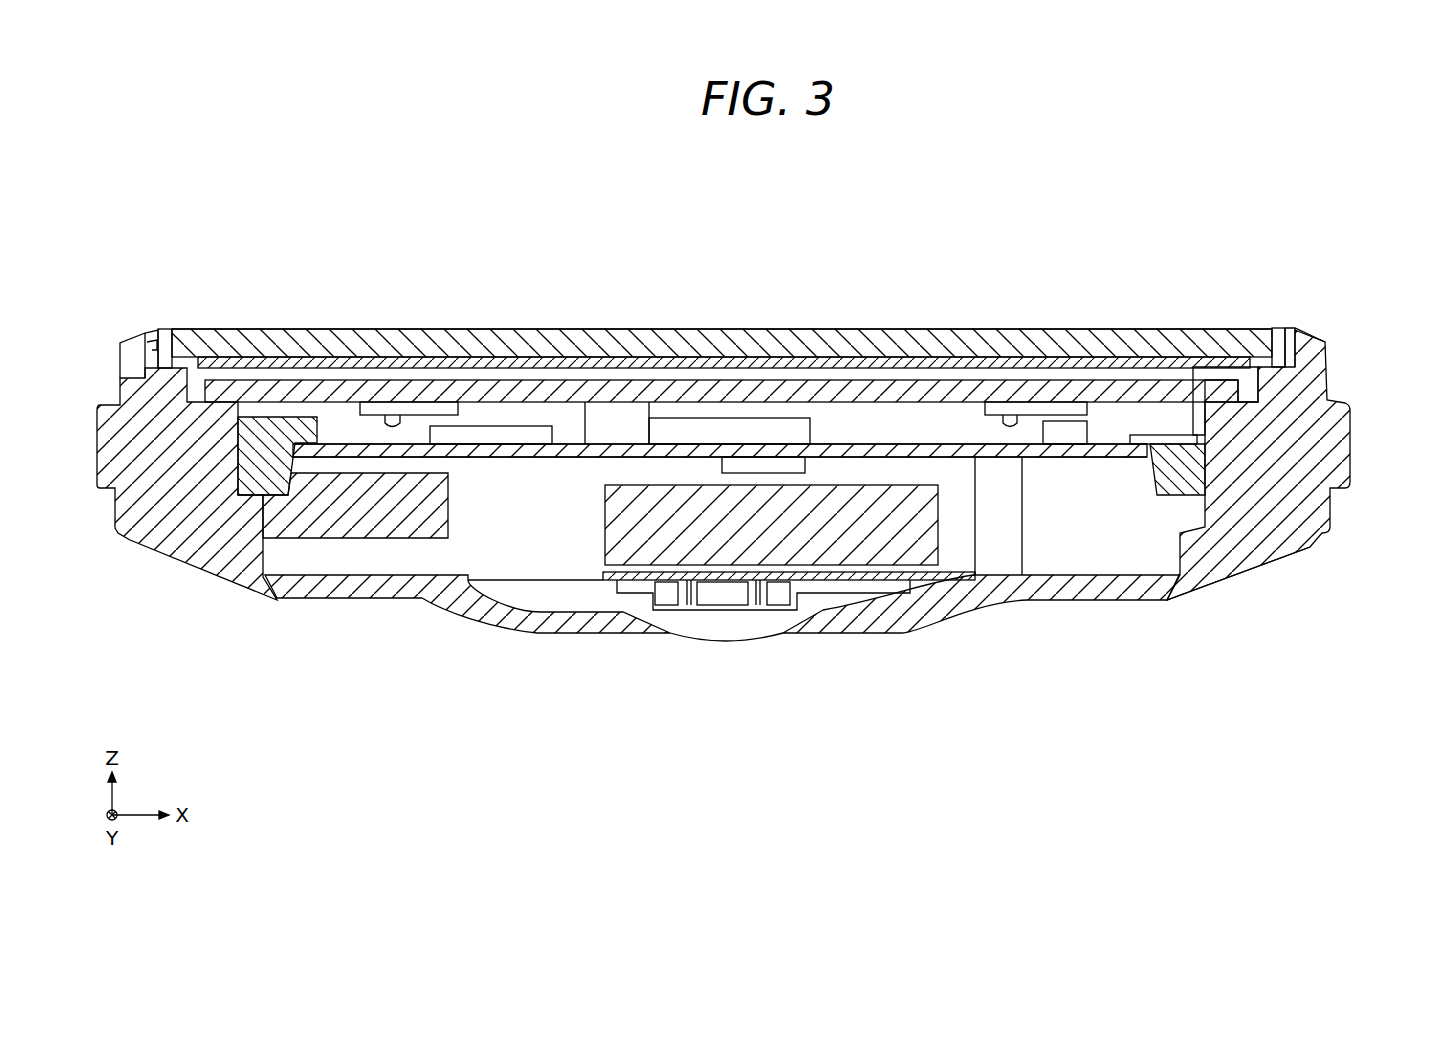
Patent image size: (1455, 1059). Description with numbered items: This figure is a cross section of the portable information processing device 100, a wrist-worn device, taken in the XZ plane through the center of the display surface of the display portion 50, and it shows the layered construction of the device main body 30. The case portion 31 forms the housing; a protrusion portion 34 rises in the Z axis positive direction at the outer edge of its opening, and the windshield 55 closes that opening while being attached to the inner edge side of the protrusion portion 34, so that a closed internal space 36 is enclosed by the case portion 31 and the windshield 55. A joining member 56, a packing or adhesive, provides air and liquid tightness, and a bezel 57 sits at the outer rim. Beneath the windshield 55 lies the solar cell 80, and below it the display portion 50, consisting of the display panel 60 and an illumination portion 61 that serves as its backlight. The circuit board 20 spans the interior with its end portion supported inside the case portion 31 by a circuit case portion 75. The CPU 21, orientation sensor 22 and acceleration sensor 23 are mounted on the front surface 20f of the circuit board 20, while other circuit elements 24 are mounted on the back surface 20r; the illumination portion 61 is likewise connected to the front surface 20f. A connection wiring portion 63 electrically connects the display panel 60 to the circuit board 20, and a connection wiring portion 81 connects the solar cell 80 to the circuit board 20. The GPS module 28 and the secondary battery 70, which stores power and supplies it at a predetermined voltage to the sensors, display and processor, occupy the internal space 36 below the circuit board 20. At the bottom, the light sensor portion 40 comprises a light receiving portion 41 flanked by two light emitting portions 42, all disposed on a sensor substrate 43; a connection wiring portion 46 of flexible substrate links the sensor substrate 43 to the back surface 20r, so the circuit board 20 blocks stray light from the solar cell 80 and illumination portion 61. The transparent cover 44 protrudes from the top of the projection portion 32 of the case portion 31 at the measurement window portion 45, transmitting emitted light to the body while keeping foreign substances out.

The portable information processing device 100 is at (1346, 181).
The device main body 30 is at (1368, 440).
The case portion 31 is at (1272, 545).
The projection portion 32 is at (900, 633).
The protrusion portion 34 is at (158, 340).
The internal space 36 is at (525, 553).
The light sensor portion 40 is at (785, 722).
The light receiving portion 41 is at (727, 606).
The light emitting portion 42 is at (670, 606).
The sensor substrate 43 is at (867, 580).
The transparent cover 44 is at (797, 612).
The measurement window portion 45 is at (670, 634).
The connection wiring portion 46 is at (1000, 547).
The display portion 50 is at (729, 320).
The windshield 55 is at (333, 332).
The joining member 56 is at (171, 350).
The bezel 57 is at (130, 347).
The display panel 60 is at (690, 392).
The illumination portion 61 is at (402, 428).
The connection wiring portion 63 is at (595, 417).
The secondary battery 70 is at (638, 508).
The circuit case portion 75 is at (250, 468).
The solar cell 80 is at (273, 358).
The connection wiring portion 81 is at (1193, 440).
The circuit board 20 is at (893, 444).
The front surface 20f is at (952, 436).
The back surface 20r is at (1103, 458).
The CPU 21 is at (767, 433).
The orientation sensor 22 is at (1088, 430).
The acceleration sensor 23 is at (505, 432).
The circuit elements 24 is at (810, 465).
The GPS module 28 is at (378, 513).